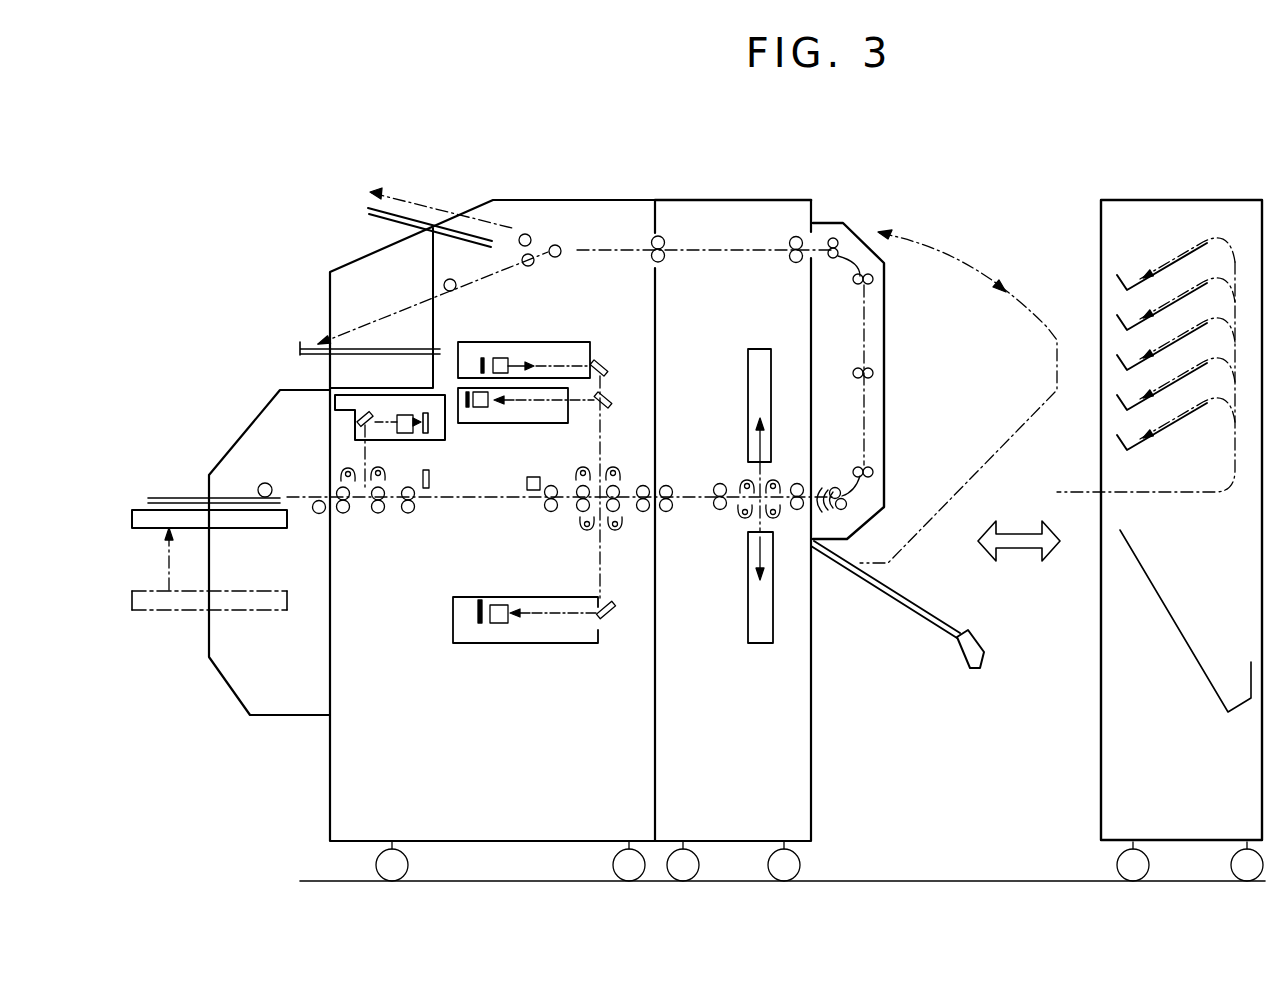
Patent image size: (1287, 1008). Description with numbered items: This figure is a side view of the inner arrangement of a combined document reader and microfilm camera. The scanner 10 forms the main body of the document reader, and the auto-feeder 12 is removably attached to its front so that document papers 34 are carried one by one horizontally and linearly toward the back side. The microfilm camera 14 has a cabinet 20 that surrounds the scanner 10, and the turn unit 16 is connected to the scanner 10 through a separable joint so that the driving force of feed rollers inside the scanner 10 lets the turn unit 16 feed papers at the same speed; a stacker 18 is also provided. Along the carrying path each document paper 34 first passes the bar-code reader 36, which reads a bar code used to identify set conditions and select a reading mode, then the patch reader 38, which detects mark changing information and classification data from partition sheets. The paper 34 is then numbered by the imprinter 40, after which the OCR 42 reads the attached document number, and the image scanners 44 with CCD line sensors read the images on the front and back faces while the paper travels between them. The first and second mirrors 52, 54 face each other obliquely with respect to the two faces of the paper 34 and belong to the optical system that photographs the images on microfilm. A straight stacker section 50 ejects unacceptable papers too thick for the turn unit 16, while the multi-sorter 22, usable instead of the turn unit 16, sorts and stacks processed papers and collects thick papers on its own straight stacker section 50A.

The scanner 10 is at (580, 200).
The auto-feeder 12 is at (253, 418).
The microfilm camera 14 is at (779, 191).
The turn unit 16 is at (850, 222).
The stacker 18 is at (372, 268).
The cabinet 20 is at (692, 200).
The multi-sorter 22 is at (1168, 198).
The document paper 34 is at (355, 348).
The bar-code reader 36 is at (335, 425).
The patch reader 38 is at (435, 500).
The imprinter 40 is at (525, 483).
The OCR 42 is at (497, 424).
The image scanner 44 is at (573, 342).
The straight stacker section 50 is at (915, 635).
The straight stacker section 50A is at (1178, 635).
The first mirror 52 is at (748, 363).
The second mirror 54 is at (750, 630).